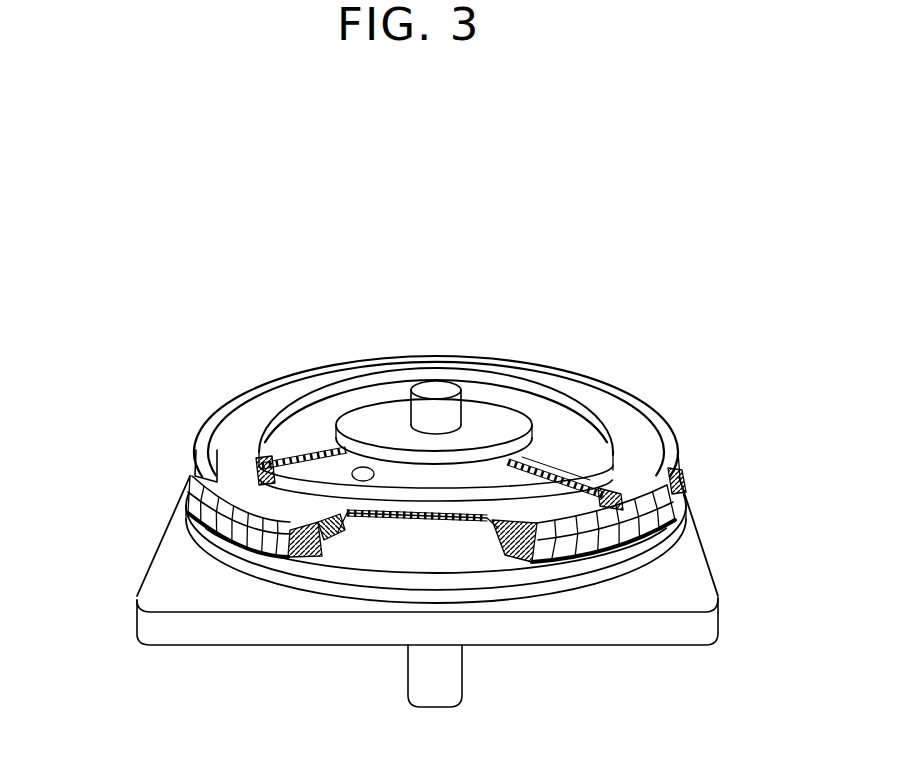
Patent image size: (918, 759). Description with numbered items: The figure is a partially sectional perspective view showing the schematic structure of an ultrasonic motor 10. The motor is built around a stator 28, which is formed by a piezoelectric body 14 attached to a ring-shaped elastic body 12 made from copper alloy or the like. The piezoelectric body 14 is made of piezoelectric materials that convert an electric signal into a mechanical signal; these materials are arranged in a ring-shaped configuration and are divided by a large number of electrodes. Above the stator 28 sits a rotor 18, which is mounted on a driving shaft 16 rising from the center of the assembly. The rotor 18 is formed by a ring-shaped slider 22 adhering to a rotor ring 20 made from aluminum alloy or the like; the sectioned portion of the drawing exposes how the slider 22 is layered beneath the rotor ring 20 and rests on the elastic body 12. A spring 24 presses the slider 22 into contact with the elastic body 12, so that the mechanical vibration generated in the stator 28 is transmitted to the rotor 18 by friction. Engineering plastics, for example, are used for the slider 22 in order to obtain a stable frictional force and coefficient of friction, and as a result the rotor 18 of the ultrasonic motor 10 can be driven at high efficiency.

The ultrasonic motor 10 is at (677, 208).
The elastic body 12 is at (684, 481).
The piezoelectric body 14 is at (692, 503).
The driving shaft 16 is at (449, 378).
The rotor 18 is at (88, 378).
The rotor ring 20 is at (208, 423).
The slider 22 is at (180, 497).
The spring 24 is at (373, 413).
The stator 28 is at (788, 453).